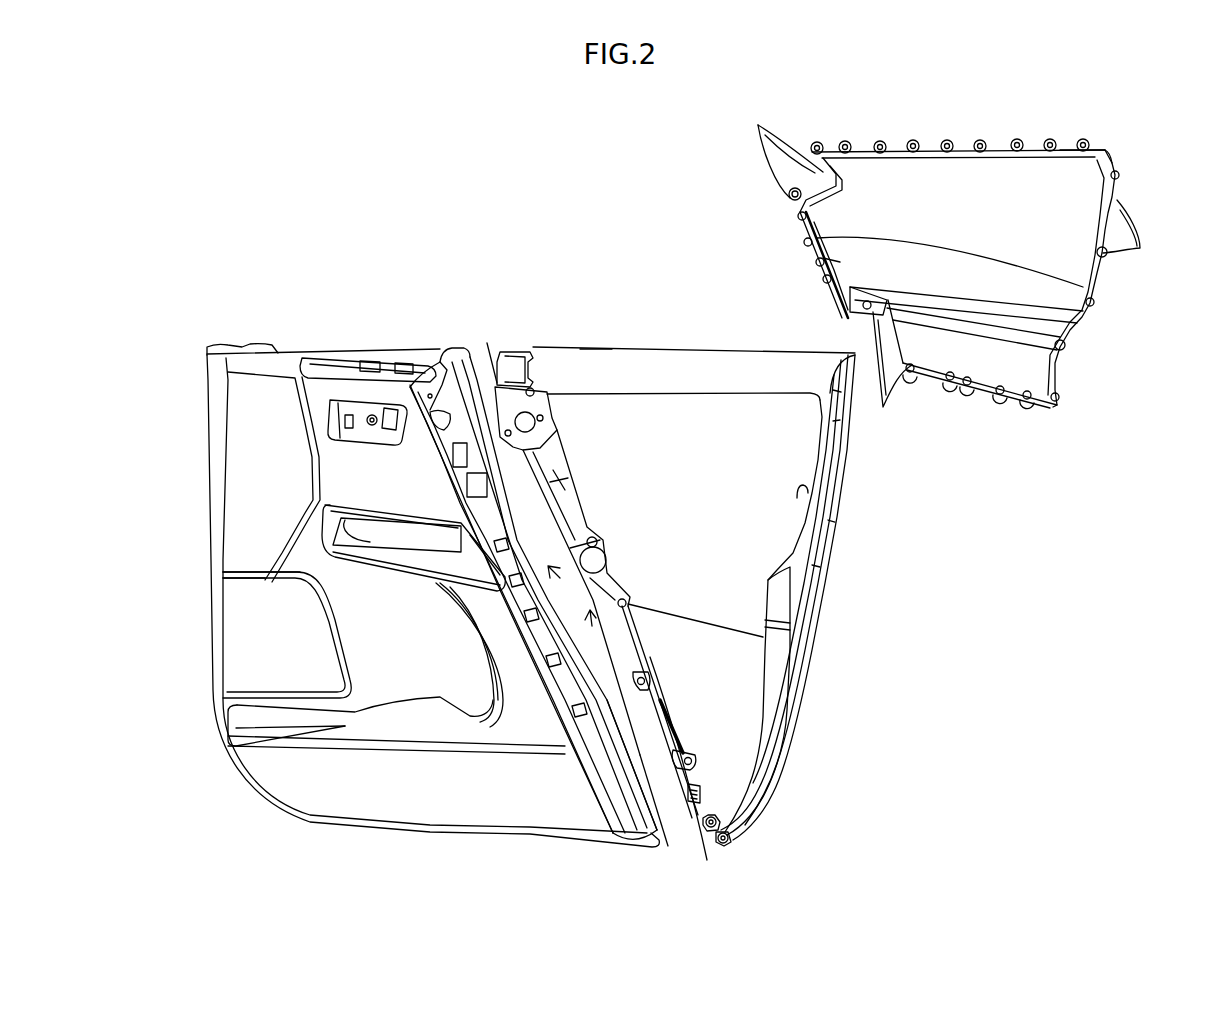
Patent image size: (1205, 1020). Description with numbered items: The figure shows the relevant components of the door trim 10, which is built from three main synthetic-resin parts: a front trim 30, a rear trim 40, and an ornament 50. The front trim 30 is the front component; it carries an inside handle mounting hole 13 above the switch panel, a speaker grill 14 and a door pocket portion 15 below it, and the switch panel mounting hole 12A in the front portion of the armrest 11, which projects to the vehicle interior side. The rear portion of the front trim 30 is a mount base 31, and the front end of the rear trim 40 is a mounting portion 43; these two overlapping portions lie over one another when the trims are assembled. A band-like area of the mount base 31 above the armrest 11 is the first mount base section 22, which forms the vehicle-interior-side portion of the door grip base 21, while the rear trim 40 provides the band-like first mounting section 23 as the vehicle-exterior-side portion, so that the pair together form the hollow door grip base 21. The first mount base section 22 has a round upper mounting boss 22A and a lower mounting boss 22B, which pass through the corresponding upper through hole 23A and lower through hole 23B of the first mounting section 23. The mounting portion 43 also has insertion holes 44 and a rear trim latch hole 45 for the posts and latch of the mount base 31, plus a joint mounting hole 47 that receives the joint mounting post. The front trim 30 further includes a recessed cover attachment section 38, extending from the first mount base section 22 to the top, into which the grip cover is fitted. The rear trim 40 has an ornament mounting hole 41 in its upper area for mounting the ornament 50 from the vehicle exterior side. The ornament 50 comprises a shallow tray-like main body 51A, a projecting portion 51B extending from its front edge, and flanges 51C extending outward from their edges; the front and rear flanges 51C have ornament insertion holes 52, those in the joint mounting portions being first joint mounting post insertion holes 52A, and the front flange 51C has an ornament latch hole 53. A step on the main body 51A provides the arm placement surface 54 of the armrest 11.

The door trim 10 is at (577, 184).
The armrest 11 is at (500, 712).
The switch panel mounting hole 12A is at (330, 521).
The inside handle mounting hole 13 is at (358, 405).
The speaker grill 14 is at (267, 651).
The door pocket portion 15 is at (347, 722).
The door grip base 21 is at (433, 197).
The first mount base section 22 is at (470, 362).
The upper mounting boss 22A is at (421, 372).
The lower mounting boss 22B is at (562, 595).
The first mounting section 23 is at (548, 370).
The upper through hole 23A is at (503, 356).
The lower through hole 23B is at (595, 362).
The front trim 30 is at (311, 311).
The mount base 31 is at (662, 811).
The cover attachment section 38 is at (395, 360).
The rear trim 40 is at (664, 296).
The ornament mounting hole 41 is at (806, 498).
The mounting portion 43 is at (683, 790).
The insertion holes 44 is at (690, 760).
The rear trim latch hole 45 is at (703, 790).
The joint mounting hole 47 is at (646, 685).
The ornament 50 is at (1000, 441).
The main body 51A is at (957, 182).
The projecting portion 51B is at (837, 256).
The flanges 51C is at (1058, 146).
The ornament insertion holes 52 is at (1140, 248).
The first joint mounting post insertion holes 52A is at (826, 266).
The ornament latch hole 53 is at (807, 248).
The arm placement surface 54 is at (1082, 308).